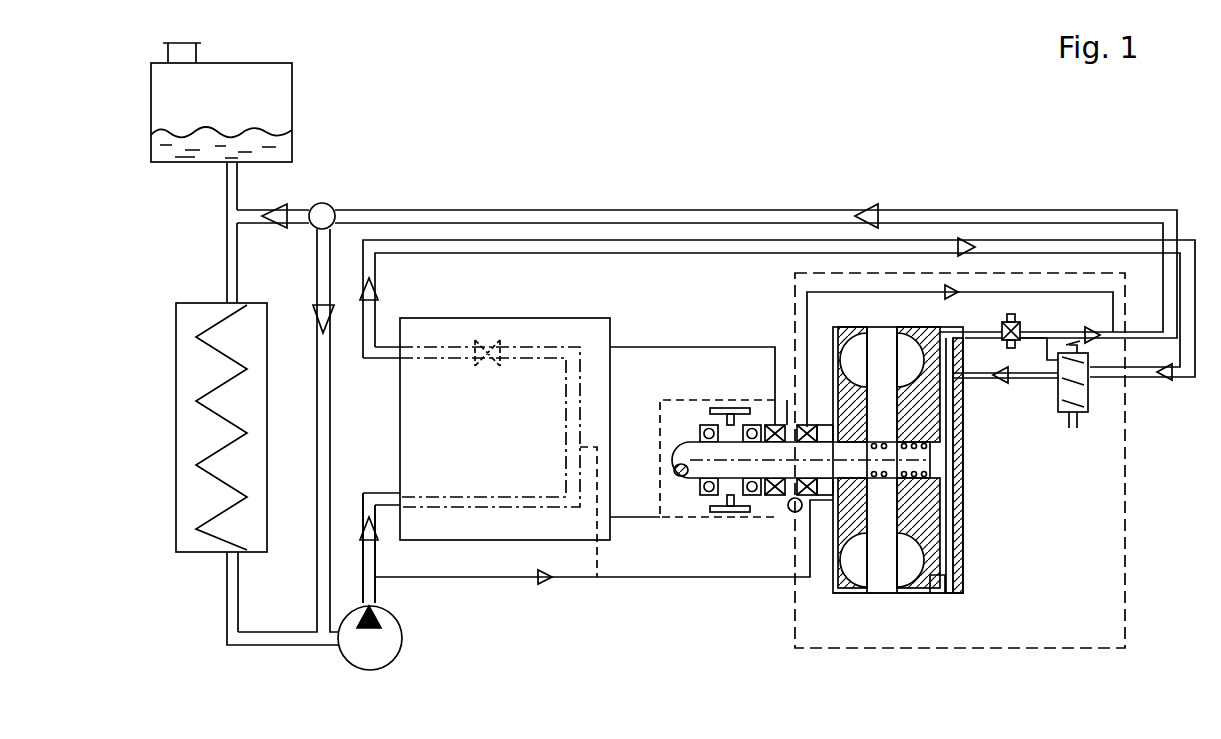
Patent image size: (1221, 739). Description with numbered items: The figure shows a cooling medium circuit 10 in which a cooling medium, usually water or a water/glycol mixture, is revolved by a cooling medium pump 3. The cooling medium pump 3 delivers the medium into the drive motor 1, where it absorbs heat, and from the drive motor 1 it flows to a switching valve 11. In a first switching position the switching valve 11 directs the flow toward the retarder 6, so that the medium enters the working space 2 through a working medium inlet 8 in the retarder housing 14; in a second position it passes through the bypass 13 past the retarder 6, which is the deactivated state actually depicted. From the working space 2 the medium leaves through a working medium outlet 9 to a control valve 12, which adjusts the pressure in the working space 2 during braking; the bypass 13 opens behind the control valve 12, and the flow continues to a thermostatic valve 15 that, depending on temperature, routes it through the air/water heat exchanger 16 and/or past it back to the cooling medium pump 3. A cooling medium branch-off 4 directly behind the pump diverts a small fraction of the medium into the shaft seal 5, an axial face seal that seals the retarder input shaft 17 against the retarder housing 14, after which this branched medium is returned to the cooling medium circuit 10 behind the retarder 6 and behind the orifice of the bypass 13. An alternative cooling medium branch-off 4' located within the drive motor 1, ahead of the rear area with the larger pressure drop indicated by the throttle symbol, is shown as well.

The drive motor 1 is at (595, 330).
The working space 2 is at (880, 560).
The cooling medium pump 3 is at (394, 638).
The cooling medium branch-off 4 is at (604, 575).
The alternative cooling medium branch-off 4' is at (635, 439).
The shaft seal 5 is at (808, 415).
The retarder 6 is at (963, 532).
The working medium inlet 8 is at (973, 380).
The working medium outlet 9 is at (983, 312).
The cooling medium circuit 10 is at (519, 172).
The switching valve 11 is at (1090, 408).
The control valve 12 is at (1022, 323).
The bypass 13 is at (1045, 380).
The retarder housing 14 is at (967, 594).
The thermostatic valve 15 is at (326, 202).
The air/water heat exchanger 16 is at (207, 548).
The retarder input shaft 17 is at (782, 472).